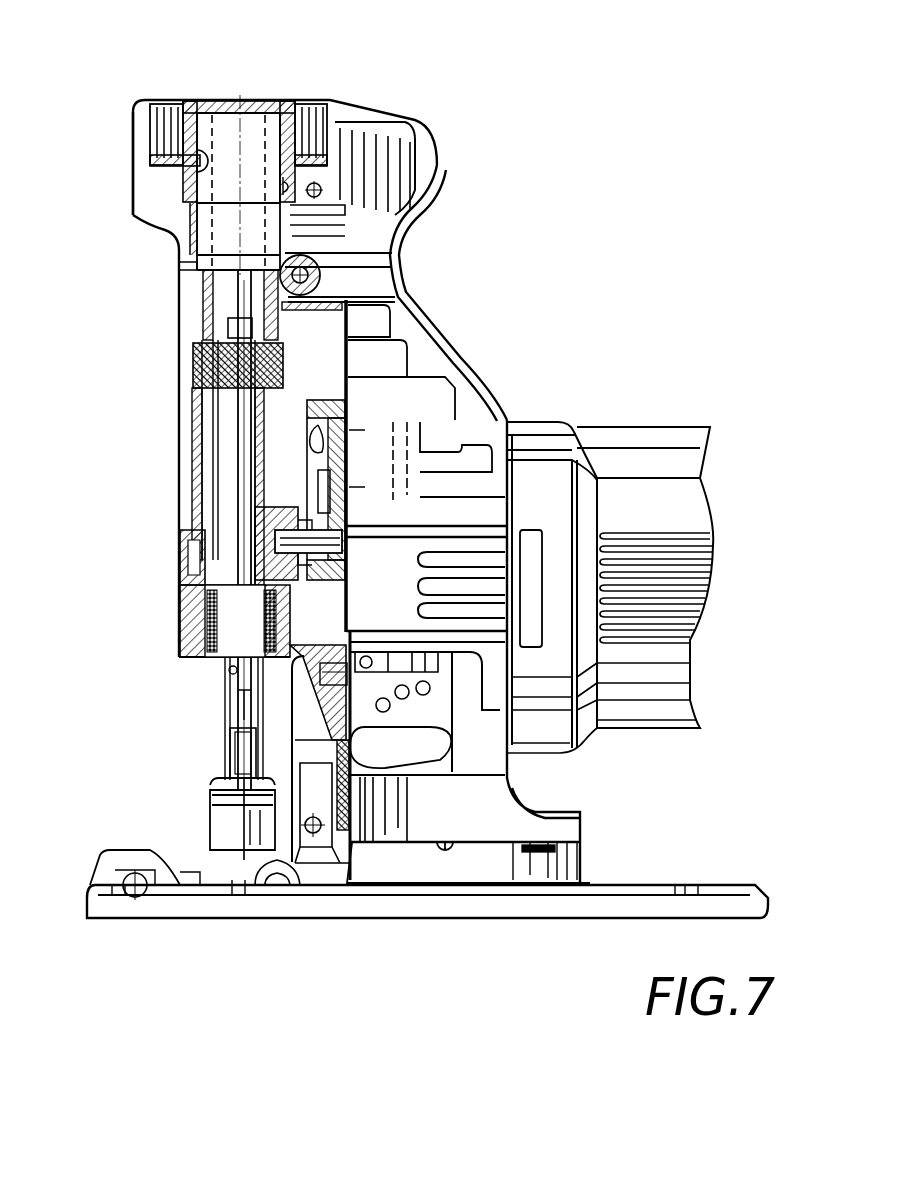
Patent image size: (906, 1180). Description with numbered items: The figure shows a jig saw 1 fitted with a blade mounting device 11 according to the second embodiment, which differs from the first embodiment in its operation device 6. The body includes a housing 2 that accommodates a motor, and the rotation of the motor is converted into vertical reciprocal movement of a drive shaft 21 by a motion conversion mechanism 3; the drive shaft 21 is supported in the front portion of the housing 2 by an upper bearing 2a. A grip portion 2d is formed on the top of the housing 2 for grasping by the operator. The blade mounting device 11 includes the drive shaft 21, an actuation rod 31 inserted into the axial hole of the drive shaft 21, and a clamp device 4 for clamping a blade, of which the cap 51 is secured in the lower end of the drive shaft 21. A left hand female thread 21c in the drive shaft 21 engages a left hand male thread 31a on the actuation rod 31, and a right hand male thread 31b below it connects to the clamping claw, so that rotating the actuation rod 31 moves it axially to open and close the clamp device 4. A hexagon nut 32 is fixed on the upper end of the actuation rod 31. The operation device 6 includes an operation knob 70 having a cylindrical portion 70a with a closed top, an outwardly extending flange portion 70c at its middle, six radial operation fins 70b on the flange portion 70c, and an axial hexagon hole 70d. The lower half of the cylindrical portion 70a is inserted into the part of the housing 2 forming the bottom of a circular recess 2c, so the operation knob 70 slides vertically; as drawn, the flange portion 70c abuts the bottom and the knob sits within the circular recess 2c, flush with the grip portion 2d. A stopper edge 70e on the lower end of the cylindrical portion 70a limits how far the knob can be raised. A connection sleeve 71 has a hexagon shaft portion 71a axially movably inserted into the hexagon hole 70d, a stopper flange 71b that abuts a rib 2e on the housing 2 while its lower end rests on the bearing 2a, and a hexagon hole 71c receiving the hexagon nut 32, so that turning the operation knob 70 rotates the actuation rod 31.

The jig saw 1 is at (498, 277).
The housing 2 is at (465, 358).
The bearing 2a is at (192, 360).
The circular recess 2c is at (322, 110).
The grip portion 2d is at (133, 148).
The rib 2e is at (190, 262).
The motion conversion mechanism 3 is at (292, 492).
The clamp device 4 is at (188, 793).
The operation device 6 is at (210, 80).
The blade mounting device 11 is at (195, 602).
The drive shaft 21 is at (220, 437).
The left hand female thread 21c is at (225, 676).
The actuation rod 31 is at (240, 487).
The left hand male thread 31a is at (245, 690).
The right hand male thread 31b is at (225, 752).
The hexagon nut 32 is at (235, 330).
The cap 51 is at (222, 820).
The operation knob 70 is at (258, 105).
The cylindrical portion 70a is at (305, 130).
The operation fins 70b is at (185, 118).
The flange portion 70c is at (165, 155).
The hexagon hole 70d is at (200, 165).
The stopper edge 70e is at (195, 252).
The connection sleeve 71 is at (380, 222).
The hexagon shaft portion 71a is at (345, 165).
The stopper flange 71b is at (195, 272).
The hexagon hole 71c is at (300, 305).